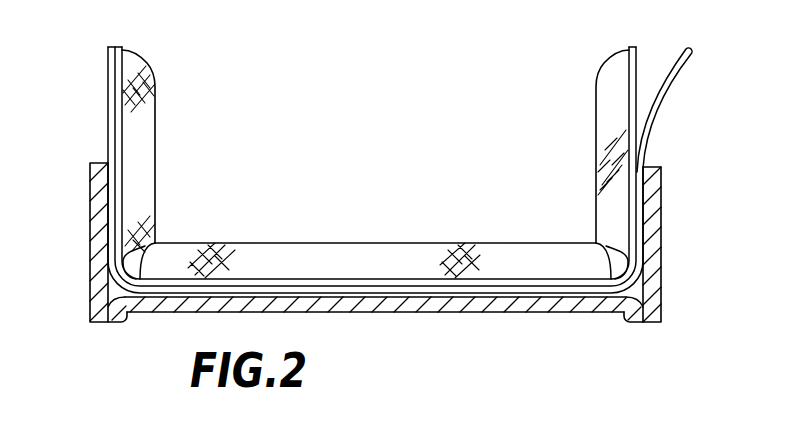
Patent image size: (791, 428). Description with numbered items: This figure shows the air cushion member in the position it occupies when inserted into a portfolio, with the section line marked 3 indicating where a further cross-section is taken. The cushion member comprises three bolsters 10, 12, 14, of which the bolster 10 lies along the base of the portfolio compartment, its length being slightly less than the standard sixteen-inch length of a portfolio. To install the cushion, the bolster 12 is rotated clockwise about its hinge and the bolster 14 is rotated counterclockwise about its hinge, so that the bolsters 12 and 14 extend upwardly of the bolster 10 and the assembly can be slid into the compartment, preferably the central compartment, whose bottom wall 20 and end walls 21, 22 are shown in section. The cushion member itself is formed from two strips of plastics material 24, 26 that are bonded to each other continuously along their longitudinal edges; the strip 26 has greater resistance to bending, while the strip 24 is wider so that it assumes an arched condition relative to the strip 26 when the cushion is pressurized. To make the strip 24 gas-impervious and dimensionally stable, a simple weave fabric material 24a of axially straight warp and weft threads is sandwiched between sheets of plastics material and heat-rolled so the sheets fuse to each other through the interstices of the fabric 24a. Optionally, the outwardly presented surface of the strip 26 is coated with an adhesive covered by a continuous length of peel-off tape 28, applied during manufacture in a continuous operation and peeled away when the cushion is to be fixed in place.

The section line 3- 3 is at (78, 197).
The bolster 10 is at (376, 253).
The bolster 12 is at (148, 128).
The bolster 14 is at (600, 108).
The bottom wall 20 is at (513, 315).
The end wall 21 is at (70, 242).
The end wall 22 is at (663, 250).
The strip of plastics material 24 is at (630, 48).
The woven fabric material 24a is at (155, 90).
The strip of plastics material 26 is at (641, 50).
The peel-off tape 28 is at (673, 72).